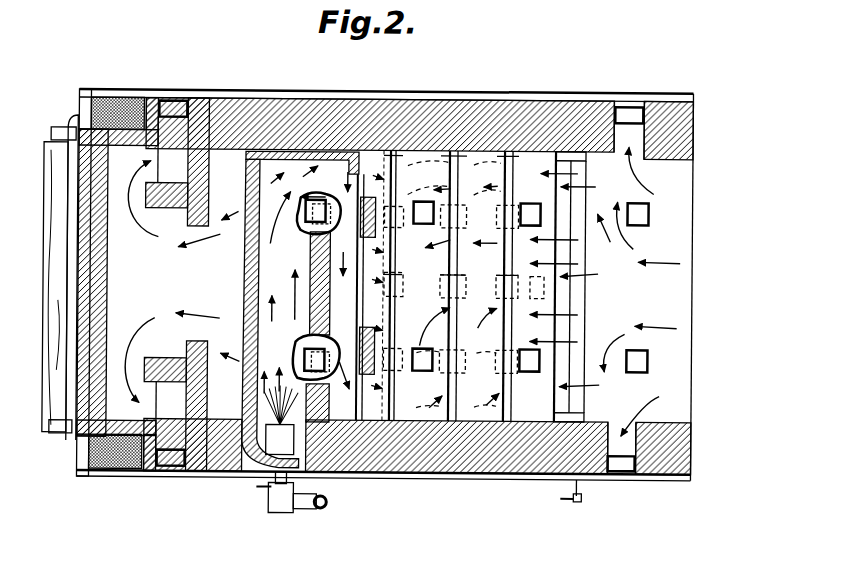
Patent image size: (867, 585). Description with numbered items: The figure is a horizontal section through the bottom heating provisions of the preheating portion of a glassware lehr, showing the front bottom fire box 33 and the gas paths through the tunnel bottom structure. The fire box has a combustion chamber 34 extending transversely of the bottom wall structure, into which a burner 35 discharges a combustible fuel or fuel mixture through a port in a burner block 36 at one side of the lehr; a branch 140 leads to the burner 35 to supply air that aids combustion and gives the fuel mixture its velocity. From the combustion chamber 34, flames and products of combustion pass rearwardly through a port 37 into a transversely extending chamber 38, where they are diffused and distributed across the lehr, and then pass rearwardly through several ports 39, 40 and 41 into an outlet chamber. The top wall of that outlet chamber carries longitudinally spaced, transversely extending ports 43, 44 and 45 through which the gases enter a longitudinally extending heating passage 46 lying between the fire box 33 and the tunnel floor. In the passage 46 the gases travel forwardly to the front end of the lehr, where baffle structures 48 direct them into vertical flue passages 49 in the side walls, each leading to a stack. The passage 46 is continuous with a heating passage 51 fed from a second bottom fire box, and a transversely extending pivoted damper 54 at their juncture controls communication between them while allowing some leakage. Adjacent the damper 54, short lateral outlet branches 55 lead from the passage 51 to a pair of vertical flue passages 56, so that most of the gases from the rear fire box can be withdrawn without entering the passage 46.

The front bottom fire box 33 is at (447, 122).
The combustion chamber 34 is at (245, 278).
The burner 35 is at (283, 511).
The burner block 36 is at (240, 474).
The port 37 is at (318, 180).
The transversely extending chamber 38 is at (311, 231).
The port 39 is at (368, 195).
The port 40 is at (301, 339).
The port 41 is at (359, 400).
The transversely extending port 43 is at (393, 187).
The transversely extending port 44 is at (448, 204).
The transversely extending port 45 is at (513, 193).
The heating passage 46 is at (438, 419).
The baffle structures 48 is at (178, 208).
The vertical flue passage 49 is at (175, 101).
The heating passage 51 is at (665, 157).
The pivoted damper 54 is at (577, 287).
The lateral outlet branch 55 is at (646, 134).
The vertical flue passage 56 is at (630, 103).
The branch 140 is at (329, 500).